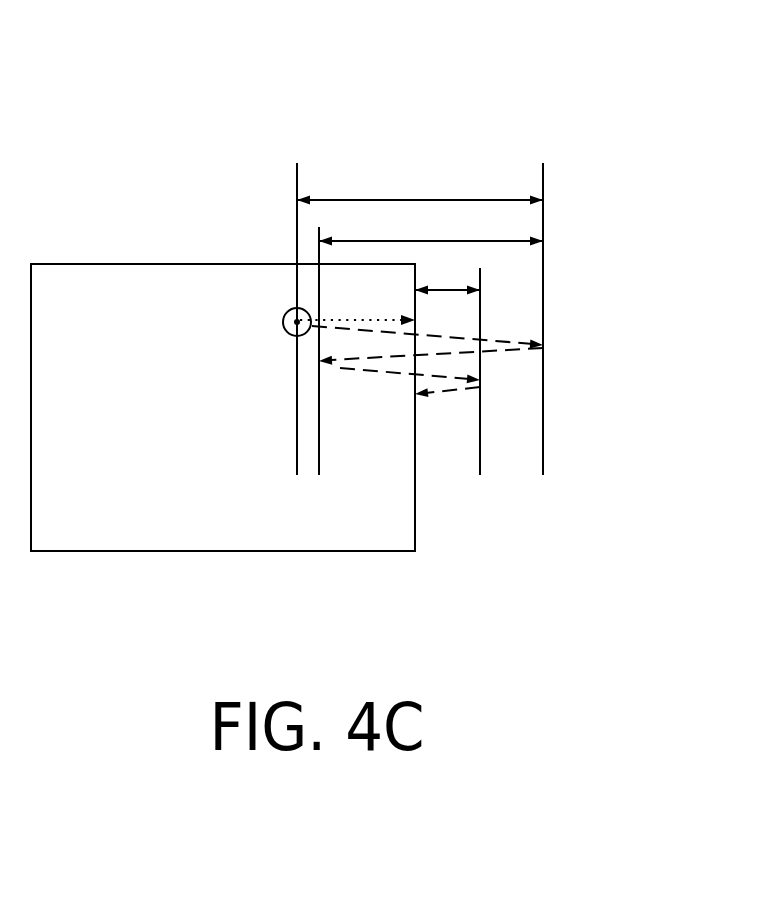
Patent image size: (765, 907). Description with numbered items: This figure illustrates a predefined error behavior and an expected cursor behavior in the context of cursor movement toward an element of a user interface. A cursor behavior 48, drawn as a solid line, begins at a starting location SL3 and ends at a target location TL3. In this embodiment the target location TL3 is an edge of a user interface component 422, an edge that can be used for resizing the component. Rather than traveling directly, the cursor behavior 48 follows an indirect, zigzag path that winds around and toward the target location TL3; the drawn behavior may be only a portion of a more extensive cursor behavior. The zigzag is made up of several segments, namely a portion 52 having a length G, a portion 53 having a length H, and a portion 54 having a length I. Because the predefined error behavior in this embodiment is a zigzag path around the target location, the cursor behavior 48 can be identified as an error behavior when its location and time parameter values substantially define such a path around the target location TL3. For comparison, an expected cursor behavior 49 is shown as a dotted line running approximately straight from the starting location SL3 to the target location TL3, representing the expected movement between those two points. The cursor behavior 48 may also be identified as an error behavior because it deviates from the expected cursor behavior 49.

The user interface component 422 is at (98, 253).
The target location TL3 is at (415, 508).
The starting location SL3 is at (275, 323).
The expected cursor behavior 49 is at (340, 317).
The portion 52 is at (360, 337).
The portion 53 is at (378, 361).
The portion 54 is at (442, 395).
The cursor behavior 48 is at (567, 319).
The length G is at (485, 200).
The length H is at (362, 241).
The length I is at (448, 288).